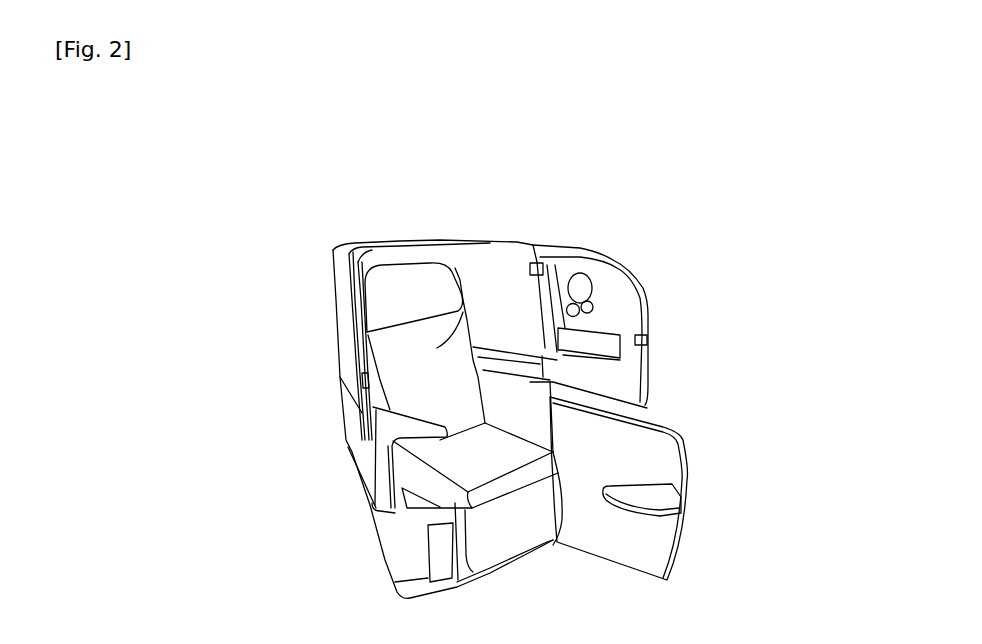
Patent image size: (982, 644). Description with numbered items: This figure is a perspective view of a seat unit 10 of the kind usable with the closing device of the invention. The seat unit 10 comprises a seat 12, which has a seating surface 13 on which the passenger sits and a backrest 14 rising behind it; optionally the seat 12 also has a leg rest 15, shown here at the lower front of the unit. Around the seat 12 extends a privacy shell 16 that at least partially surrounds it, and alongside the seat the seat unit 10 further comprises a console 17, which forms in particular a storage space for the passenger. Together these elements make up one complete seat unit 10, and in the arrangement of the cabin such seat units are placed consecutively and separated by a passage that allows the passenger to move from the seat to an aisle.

The seat unit 10 is at (340, 203).
The seat 12 is at (402, 374).
The seating surface 13 is at (455, 459).
The backrest 14 is at (460, 268).
The leg rest 15 is at (510, 532).
The privacy shell 16 is at (500, 282).
The console 17 is at (678, 415).